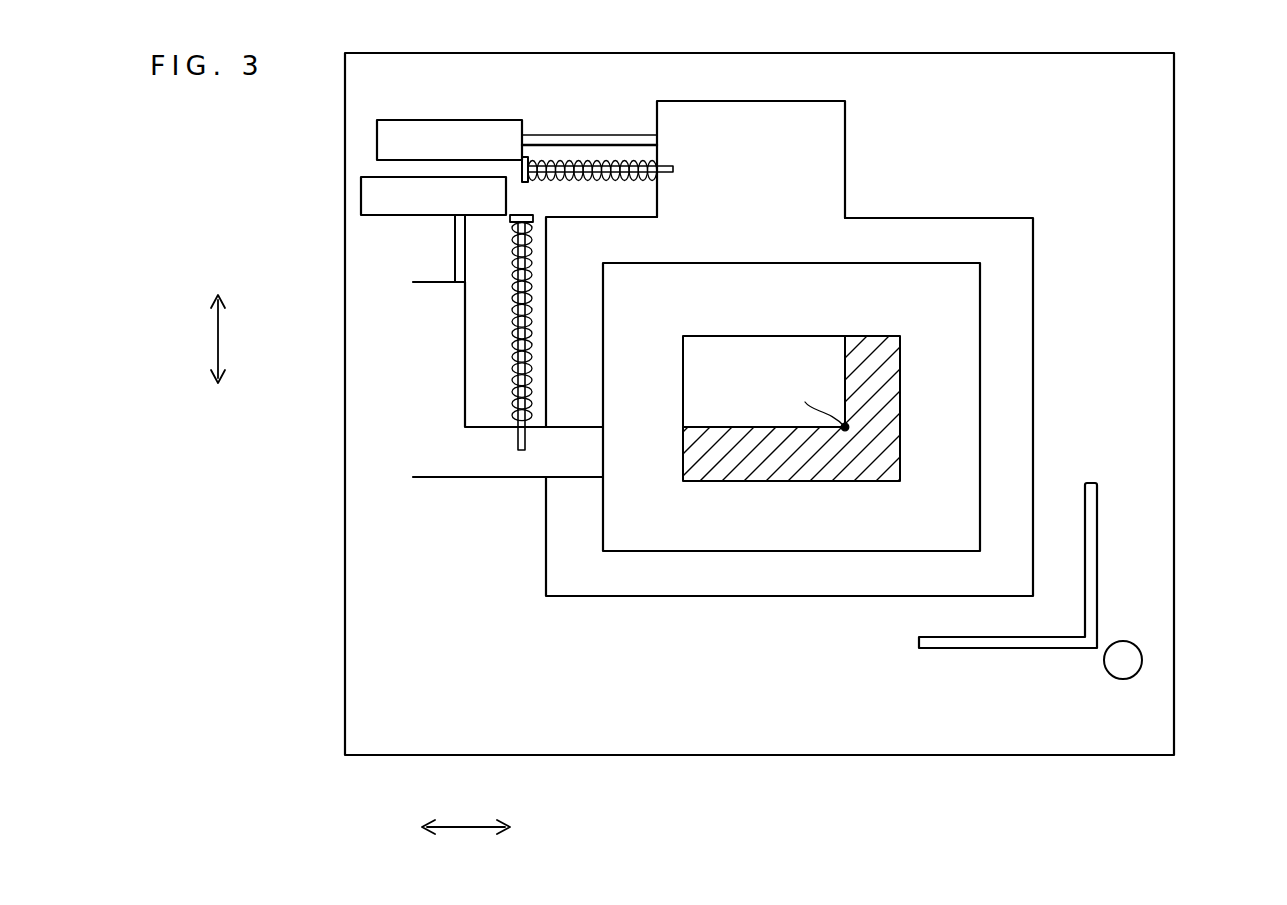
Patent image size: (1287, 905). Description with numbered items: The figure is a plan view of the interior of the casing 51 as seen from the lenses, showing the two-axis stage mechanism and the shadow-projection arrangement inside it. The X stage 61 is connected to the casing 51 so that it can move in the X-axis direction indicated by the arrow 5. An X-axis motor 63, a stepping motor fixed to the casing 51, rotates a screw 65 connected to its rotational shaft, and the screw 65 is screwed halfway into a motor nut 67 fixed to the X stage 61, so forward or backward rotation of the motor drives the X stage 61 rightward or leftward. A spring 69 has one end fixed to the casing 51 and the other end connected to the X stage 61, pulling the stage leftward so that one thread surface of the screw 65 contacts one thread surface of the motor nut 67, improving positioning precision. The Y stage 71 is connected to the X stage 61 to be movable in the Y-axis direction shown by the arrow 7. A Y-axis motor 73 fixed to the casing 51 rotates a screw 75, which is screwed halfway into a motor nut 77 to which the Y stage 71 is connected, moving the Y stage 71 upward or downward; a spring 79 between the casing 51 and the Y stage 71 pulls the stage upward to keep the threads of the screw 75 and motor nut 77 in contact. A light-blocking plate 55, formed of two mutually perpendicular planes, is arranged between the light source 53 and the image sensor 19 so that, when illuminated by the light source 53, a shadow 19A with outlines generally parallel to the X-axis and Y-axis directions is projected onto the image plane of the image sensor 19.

The casing 51 is at (1157, 181).
The X stage 61 is at (1015, 262).
The motor nut 67 is at (837, 132).
The Y stage 71 is at (660, 530).
The image sensor 19 is at (825, 384).
The shadow 19A is at (890, 460).
The X-axis motor 63 is at (435, 120).
The screw 65 is at (548, 134).
The spring 69 is at (567, 180).
The Y-axis motor 73 is at (385, 217).
The screw 75 is at (455, 252).
The motor nut 77 is at (423, 333).
The spring 79 is at (512, 312).
The light-blocking plate 55 is at (951, 650).
The light source 53 is at (1112, 662).
The arrow 7 is at (218, 338).
The arrow 5 is at (465, 825).